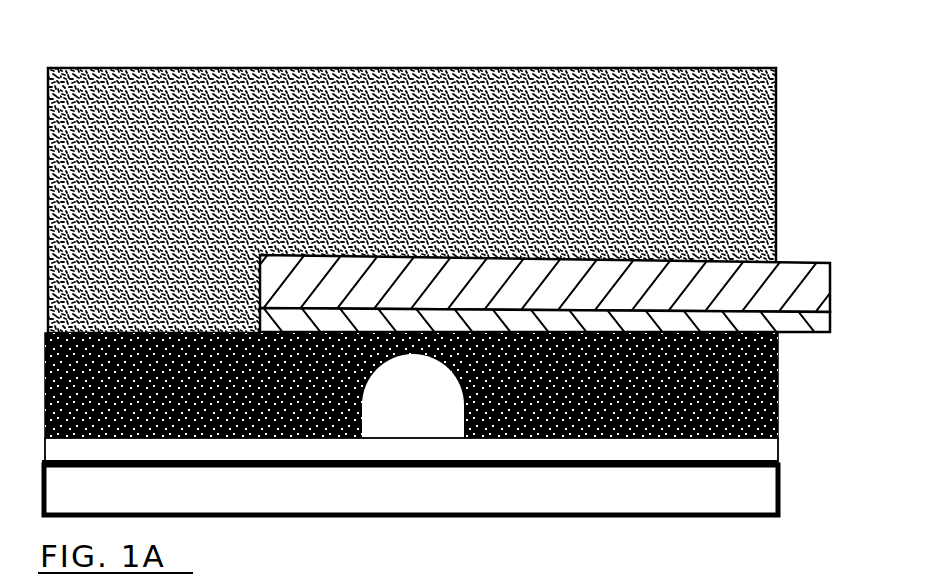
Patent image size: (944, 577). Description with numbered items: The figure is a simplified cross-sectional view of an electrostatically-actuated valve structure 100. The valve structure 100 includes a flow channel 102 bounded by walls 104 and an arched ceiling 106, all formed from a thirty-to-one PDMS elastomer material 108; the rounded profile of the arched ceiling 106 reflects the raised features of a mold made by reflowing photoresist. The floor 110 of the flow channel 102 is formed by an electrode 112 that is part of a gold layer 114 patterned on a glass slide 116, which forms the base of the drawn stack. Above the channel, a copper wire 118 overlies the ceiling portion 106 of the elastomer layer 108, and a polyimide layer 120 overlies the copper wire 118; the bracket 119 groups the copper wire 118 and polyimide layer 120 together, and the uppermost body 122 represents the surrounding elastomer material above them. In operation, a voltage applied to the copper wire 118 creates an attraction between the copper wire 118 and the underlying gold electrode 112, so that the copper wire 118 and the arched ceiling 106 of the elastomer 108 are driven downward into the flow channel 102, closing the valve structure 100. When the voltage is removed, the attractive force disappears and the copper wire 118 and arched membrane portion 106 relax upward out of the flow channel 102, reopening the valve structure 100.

The valve structure 100 is at (402, 38).
The flow channel 102 is at (408, 425).
The walls 104 is at (458, 398).
The arched ceiling 106 is at (417, 361).
The PDMS elastomer material 108 is at (779, 393).
The floor 110 is at (441, 435).
The electrode 112 is at (427, 449).
The gold layer 114 is at (768, 452).
The glass slide 116 is at (761, 490).
The copper wire 118 is at (828, 334).
The capping stack 119 is at (562, 291).
The polyimide layer 120 is at (787, 270).
The encapsulation layer 122 is at (762, 153).